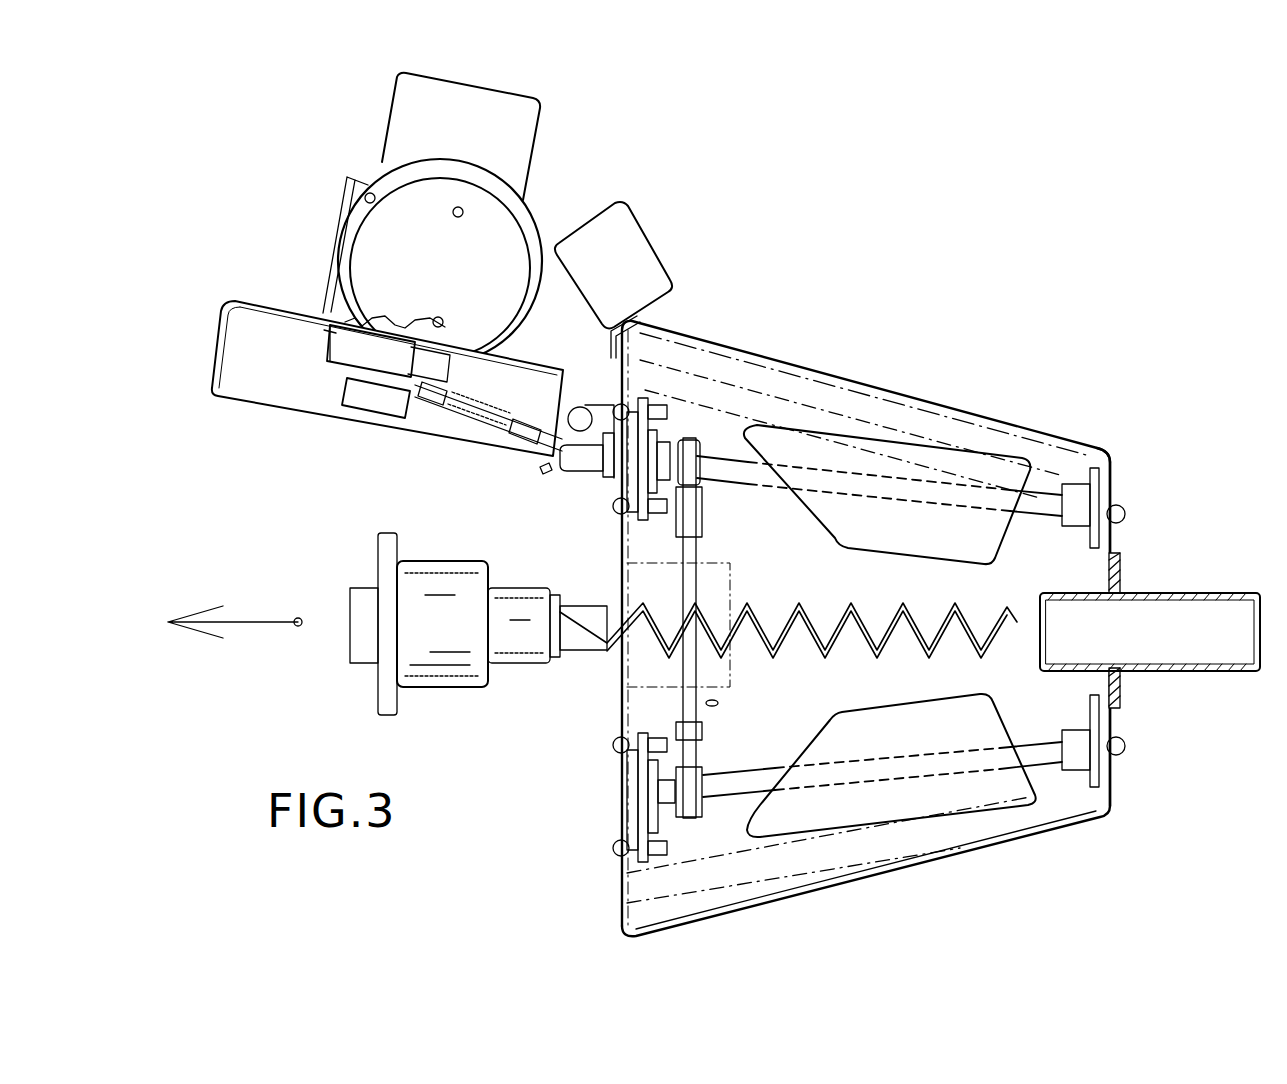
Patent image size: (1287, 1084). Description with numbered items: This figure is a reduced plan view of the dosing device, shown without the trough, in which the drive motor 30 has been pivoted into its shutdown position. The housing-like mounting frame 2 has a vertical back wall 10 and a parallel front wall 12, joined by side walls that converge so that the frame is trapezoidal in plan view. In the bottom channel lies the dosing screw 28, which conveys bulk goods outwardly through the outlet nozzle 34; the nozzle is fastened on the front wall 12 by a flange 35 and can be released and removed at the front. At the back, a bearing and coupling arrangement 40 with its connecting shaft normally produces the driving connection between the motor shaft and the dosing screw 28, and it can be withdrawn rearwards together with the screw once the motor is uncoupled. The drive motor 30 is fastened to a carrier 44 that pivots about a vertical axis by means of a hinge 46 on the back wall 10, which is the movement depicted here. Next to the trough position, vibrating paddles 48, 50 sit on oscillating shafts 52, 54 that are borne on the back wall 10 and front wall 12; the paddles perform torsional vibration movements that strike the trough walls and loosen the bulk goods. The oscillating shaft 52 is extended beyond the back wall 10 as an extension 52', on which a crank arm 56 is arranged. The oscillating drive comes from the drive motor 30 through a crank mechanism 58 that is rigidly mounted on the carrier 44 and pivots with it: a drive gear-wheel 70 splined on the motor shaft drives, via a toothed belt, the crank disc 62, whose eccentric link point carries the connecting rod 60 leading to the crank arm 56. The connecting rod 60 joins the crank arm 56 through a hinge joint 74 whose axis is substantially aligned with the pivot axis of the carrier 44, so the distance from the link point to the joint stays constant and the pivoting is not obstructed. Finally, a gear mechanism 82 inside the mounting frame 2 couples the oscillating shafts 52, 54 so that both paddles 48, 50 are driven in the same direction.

The mounting frame 2 is at (1107, 446).
The back wall 10 is at (610, 897).
The front wall 12 is at (1112, 478).
The dosing screw 28 is at (790, 602).
The drive motor 30 is at (456, 268).
The outlet nozzle 34 is at (1212, 593).
The flange 35 is at (1122, 565).
The bearing and coupling arrangement 40 is at (456, 560).
The carrier 44 is at (249, 302).
The hinge 46 is at (580, 407).
The vibrating paddle 48 is at (935, 470).
The vibrating paddle 50 is at (1005, 795).
The oscillating shaft 52 is at (911, 443).
The extension 52' is at (634, 630).
The oscillating shaft 54 is at (1048, 765).
The crank arm 56 is at (600, 472).
The crank mechanism 58 is at (322, 352).
The connecting rod 60 is at (470, 420).
The crank disc 62 is at (350, 350).
The drive gear-wheel 70 is at (352, 350).
The hinge joint 74 is at (540, 470).
The gear mechanism 82 is at (718, 702).